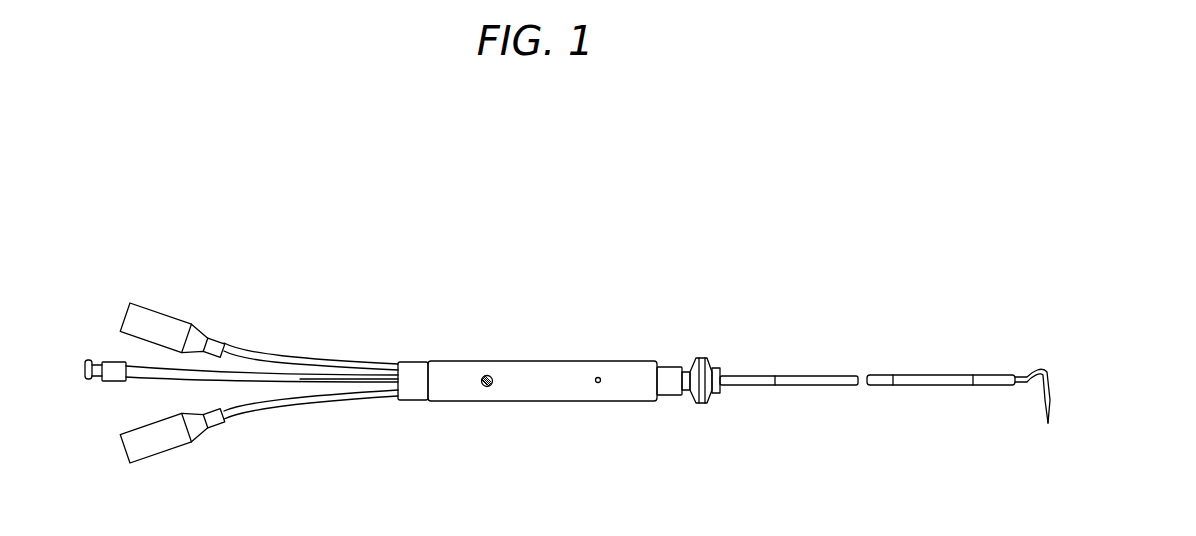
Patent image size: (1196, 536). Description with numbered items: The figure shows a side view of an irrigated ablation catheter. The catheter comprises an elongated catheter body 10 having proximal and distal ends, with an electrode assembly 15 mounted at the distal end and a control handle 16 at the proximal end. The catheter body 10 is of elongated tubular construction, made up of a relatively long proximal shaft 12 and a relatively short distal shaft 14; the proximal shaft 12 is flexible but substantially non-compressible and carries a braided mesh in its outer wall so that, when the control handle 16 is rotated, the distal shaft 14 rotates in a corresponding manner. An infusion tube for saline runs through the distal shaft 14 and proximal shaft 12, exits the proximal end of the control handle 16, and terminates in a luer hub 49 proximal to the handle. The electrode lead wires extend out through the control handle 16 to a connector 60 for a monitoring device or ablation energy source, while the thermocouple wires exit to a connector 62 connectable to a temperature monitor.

The catheter body 10 is at (730, 338).
The proximal shaft 12 is at (838, 375).
The distal shaft 14 is at (958, 376).
The electrode assembly 15 is at (1063, 372).
The control handle 16 is at (575, 361).
The luer hub 49 is at (110, 368).
The connector 60 is at (132, 437).
The connector 62 is at (130, 305).